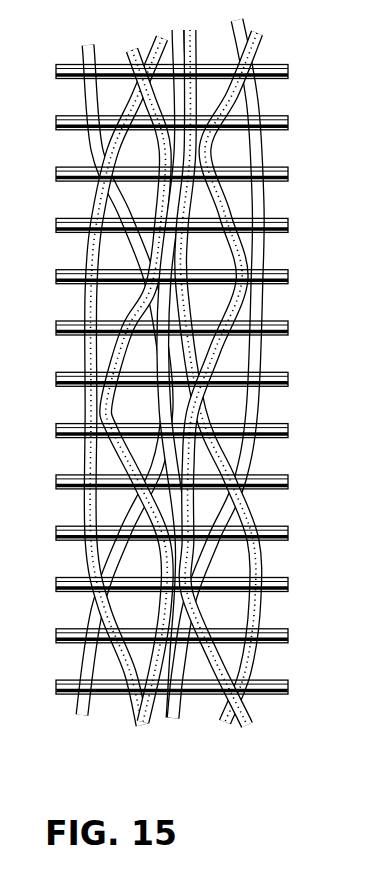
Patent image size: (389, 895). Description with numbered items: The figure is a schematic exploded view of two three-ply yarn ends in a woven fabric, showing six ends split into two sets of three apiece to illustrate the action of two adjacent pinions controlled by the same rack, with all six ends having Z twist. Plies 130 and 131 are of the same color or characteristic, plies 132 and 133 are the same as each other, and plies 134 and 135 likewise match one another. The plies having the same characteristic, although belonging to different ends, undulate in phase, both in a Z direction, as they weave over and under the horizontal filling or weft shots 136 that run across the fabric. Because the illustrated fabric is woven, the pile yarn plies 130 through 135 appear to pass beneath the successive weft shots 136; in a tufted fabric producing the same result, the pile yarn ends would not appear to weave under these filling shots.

The ply 130 is at (77, 710).
The ply 131 is at (173, 712).
The ply 132 is at (262, 565).
The ply 133 is at (137, 732).
The ply 134 is at (182, 507).
The ply 135 is at (87, 507).
The filling or weft shot 136 is at (292, 272).